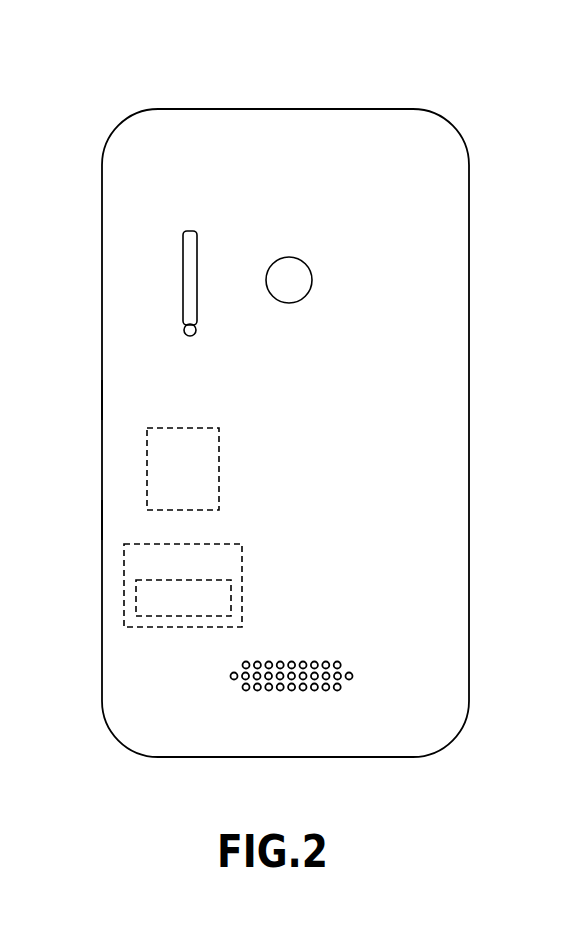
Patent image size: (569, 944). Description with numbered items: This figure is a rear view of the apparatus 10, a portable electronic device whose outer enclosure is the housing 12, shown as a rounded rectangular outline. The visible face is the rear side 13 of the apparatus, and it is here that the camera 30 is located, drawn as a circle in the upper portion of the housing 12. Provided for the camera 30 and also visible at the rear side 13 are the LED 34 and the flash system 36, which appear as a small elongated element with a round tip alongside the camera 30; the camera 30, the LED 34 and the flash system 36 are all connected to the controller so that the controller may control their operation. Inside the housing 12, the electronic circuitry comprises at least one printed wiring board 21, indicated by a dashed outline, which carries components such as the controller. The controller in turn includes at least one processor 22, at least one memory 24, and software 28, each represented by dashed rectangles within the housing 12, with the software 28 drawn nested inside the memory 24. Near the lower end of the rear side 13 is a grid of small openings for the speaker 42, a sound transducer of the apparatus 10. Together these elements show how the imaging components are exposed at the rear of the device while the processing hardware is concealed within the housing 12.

The apparatus 10 is at (452, 84).
The housing 12 is at (470, 170).
The rear side 13 is at (118, 398).
The printed wiring board 21 is at (130, 521).
The processor 22 is at (147, 478).
The memory 24 is at (124, 565).
The software 28 is at (140, 600).
The camera 30 is at (295, 270).
The LED 34 is at (185, 330).
The flash system 36 is at (183, 248).
The speaker 42 is at (280, 691).